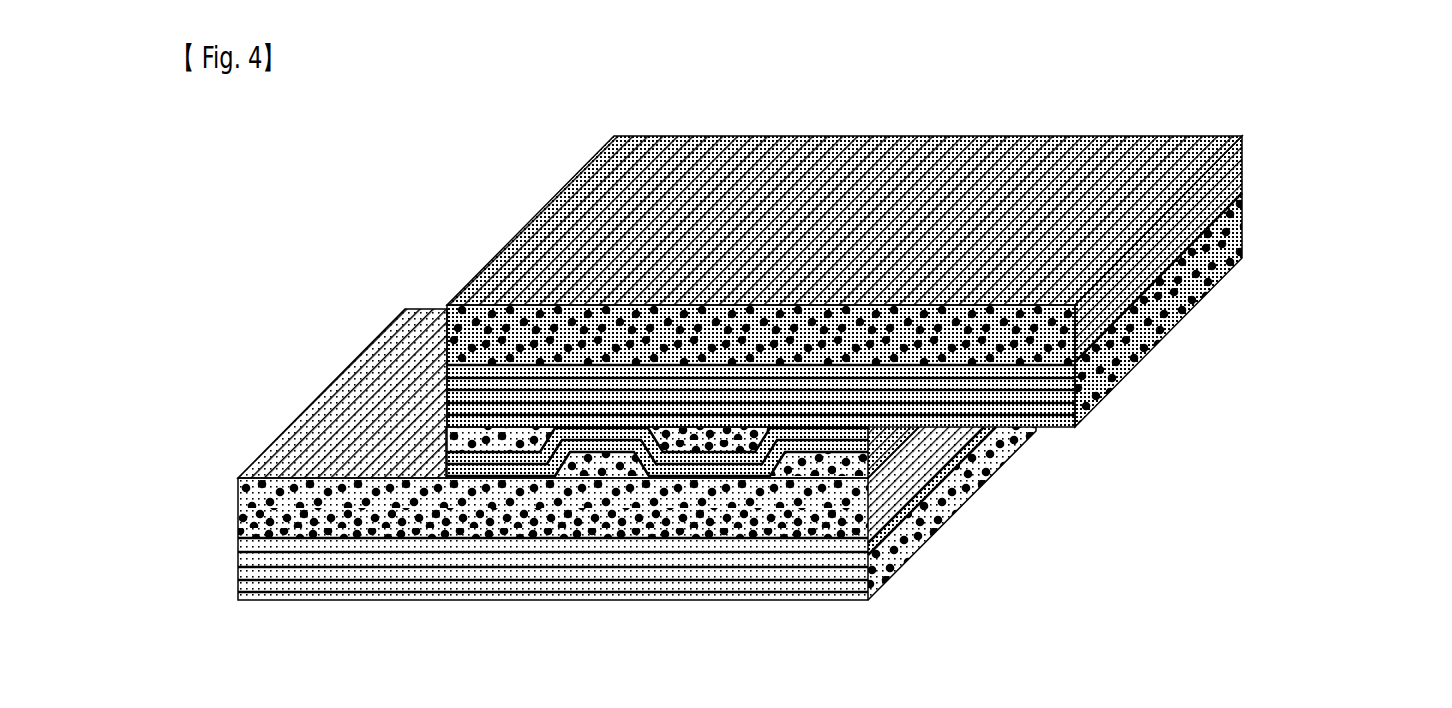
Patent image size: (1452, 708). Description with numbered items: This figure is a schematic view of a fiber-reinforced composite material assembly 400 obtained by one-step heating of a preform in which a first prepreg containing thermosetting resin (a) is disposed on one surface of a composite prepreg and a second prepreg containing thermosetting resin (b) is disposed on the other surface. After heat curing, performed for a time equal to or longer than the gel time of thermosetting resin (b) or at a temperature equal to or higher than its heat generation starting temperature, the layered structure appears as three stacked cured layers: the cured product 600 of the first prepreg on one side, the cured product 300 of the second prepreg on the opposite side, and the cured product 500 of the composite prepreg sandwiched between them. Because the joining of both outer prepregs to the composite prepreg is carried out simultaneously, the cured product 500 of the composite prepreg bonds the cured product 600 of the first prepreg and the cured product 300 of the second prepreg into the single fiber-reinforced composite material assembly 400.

The cured product of second prepreg 300 is at (942, 280).
The fiber-reinforced composite material assembly 400 is at (363, 293).
The cured product of composite prepreg 500 is at (1044, 518).
The cured product of first prepreg 600 is at (466, 465).